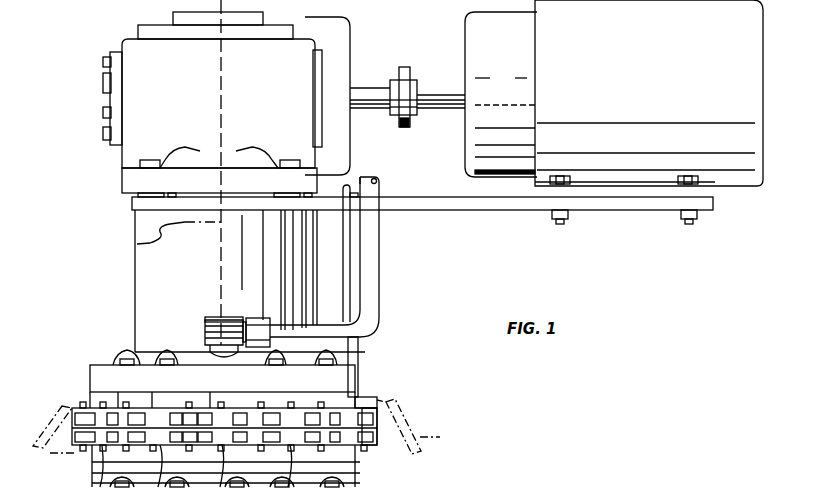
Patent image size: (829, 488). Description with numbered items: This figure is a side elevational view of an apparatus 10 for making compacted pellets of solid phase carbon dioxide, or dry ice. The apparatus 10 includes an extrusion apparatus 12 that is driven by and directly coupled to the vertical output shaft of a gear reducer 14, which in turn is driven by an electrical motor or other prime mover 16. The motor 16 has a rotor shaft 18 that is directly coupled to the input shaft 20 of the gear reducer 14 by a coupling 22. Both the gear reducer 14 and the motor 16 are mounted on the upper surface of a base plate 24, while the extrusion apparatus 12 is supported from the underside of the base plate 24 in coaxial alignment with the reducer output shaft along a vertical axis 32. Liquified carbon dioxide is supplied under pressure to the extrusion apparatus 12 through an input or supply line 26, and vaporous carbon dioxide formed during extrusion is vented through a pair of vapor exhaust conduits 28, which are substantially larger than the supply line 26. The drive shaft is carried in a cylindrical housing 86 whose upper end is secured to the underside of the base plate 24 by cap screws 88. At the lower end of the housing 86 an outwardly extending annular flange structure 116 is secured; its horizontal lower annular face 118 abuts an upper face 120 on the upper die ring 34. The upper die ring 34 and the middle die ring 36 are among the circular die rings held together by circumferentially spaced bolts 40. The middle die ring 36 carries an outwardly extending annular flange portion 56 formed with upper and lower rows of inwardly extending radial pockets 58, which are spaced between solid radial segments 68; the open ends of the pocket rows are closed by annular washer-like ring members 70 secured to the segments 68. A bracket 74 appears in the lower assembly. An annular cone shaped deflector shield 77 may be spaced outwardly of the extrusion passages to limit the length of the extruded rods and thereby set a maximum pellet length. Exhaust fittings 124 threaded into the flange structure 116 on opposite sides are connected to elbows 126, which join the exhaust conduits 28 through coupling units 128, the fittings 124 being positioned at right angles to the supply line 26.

The apparatus for making compacted pellets of solid phase carbon dioxide 10 is at (455, 250).
The extrusion apparatus 12 is at (366, 356).
The gear reducer 14 is at (108, 162).
The electrical motor or other prime mover 16 is at (655, 81).
The rotor shaft 18 is at (440, 100).
The input shaft 20 is at (372, 88).
The coupling 22 is at (406, 66).
The base plate 24 is at (510, 200).
The input or supply line 26 is at (345, 272).
The vapor exhaust conduits 28 is at (372, 272).
The vertical axis 32 is at (130, 244).
The upper die ring 34 is at (378, 396).
The middle die ring 36 is at (408, 413).
The bolts 40 is at (120, 345).
The annular flange portion 56 is at (165, 418).
The radial pockets 58 is at (92, 405).
The solid radial segments 68 is at (150, 413).
The annular washer-like ring members 70 is at (52, 406).
The bracket 74 is at (130, 408).
The annular cone shaped deflector shield 77 is at (437, 437).
The cylindrical housing 86 is at (135, 265).
The cap screws 88 is at (236, 151).
The annular flange structure 116 is at (360, 372).
The lower annular face 118 is at (90, 378).
The upper face 120 is at (210, 405).
The exhaust fittings 124 is at (229, 318).
The elbows 126 is at (214, 318).
The coupling units 128 is at (254, 318).